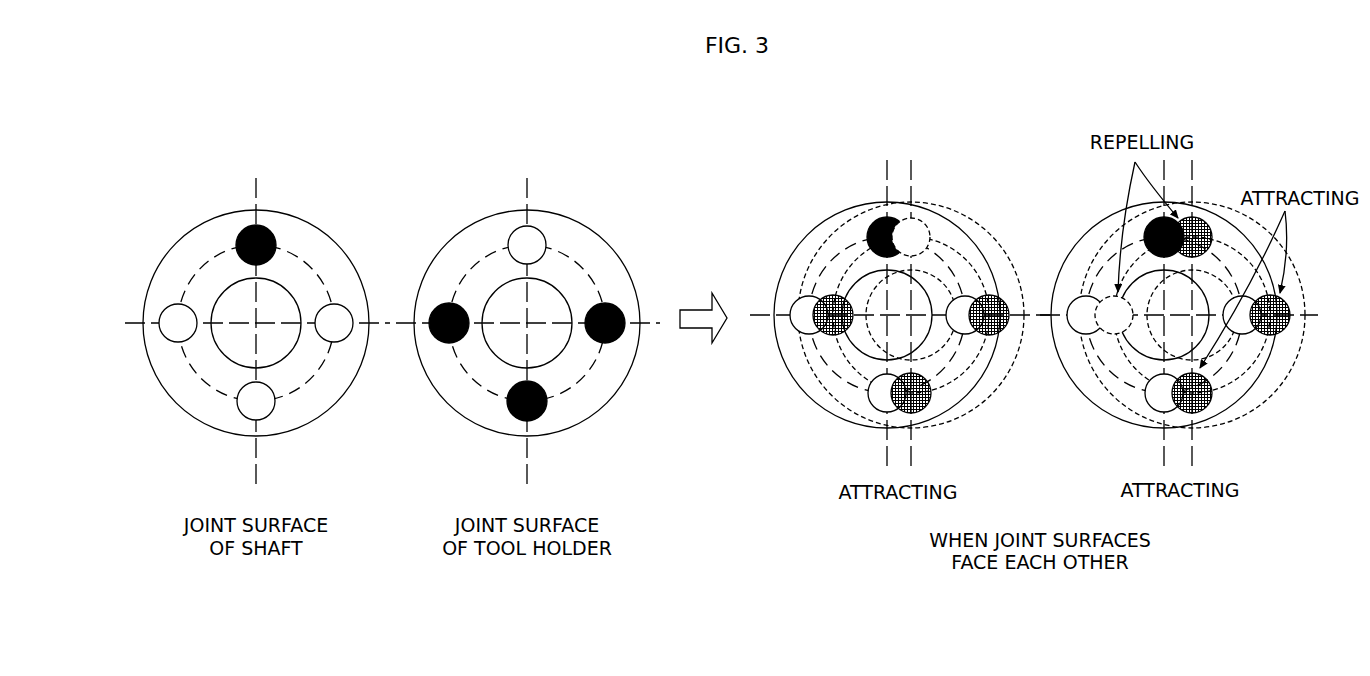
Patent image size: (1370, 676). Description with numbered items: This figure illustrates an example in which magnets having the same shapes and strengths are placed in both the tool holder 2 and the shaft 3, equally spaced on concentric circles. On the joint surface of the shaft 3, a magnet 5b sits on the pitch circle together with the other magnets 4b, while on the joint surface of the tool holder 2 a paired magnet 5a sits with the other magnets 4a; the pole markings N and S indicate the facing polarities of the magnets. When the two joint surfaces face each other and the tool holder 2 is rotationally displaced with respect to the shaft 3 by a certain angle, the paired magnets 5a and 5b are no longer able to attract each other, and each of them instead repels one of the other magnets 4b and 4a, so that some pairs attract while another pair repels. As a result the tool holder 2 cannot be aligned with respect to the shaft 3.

The tool holder 2 is at (588, 228).
The shaft 3 is at (158, 266).
The magnets 4a is at (608, 305).
The magnets 4b is at (340, 305).
The magnet 5a is at (512, 232).
The magnet 5b is at (248, 232).
The north pole N is at (266, 222).
The south pole S is at (340, 344).